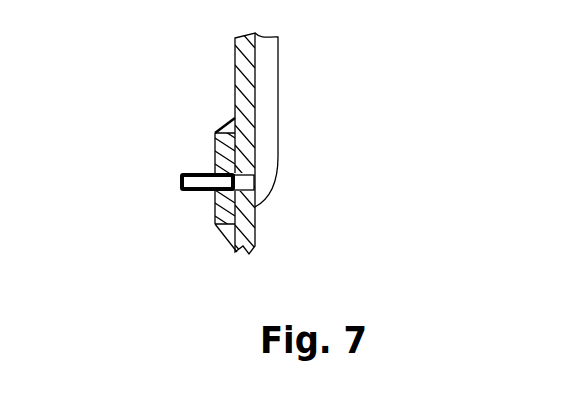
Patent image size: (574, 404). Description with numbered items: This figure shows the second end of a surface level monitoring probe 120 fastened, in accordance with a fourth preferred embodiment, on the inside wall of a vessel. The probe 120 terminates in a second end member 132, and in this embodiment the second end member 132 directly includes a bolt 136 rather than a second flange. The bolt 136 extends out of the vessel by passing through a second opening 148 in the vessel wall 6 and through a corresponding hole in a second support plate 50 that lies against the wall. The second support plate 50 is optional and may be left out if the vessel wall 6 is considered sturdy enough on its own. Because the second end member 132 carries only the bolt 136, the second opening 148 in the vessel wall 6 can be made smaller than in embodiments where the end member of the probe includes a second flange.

The vessel wall 6 is at (250, 95).
The probe 120 is at (312, 76).
The second support plate 50 is at (220, 150).
The bolt 136 is at (180, 176).
The second end member 132 is at (262, 170).
The second opening 148 is at (256, 204).